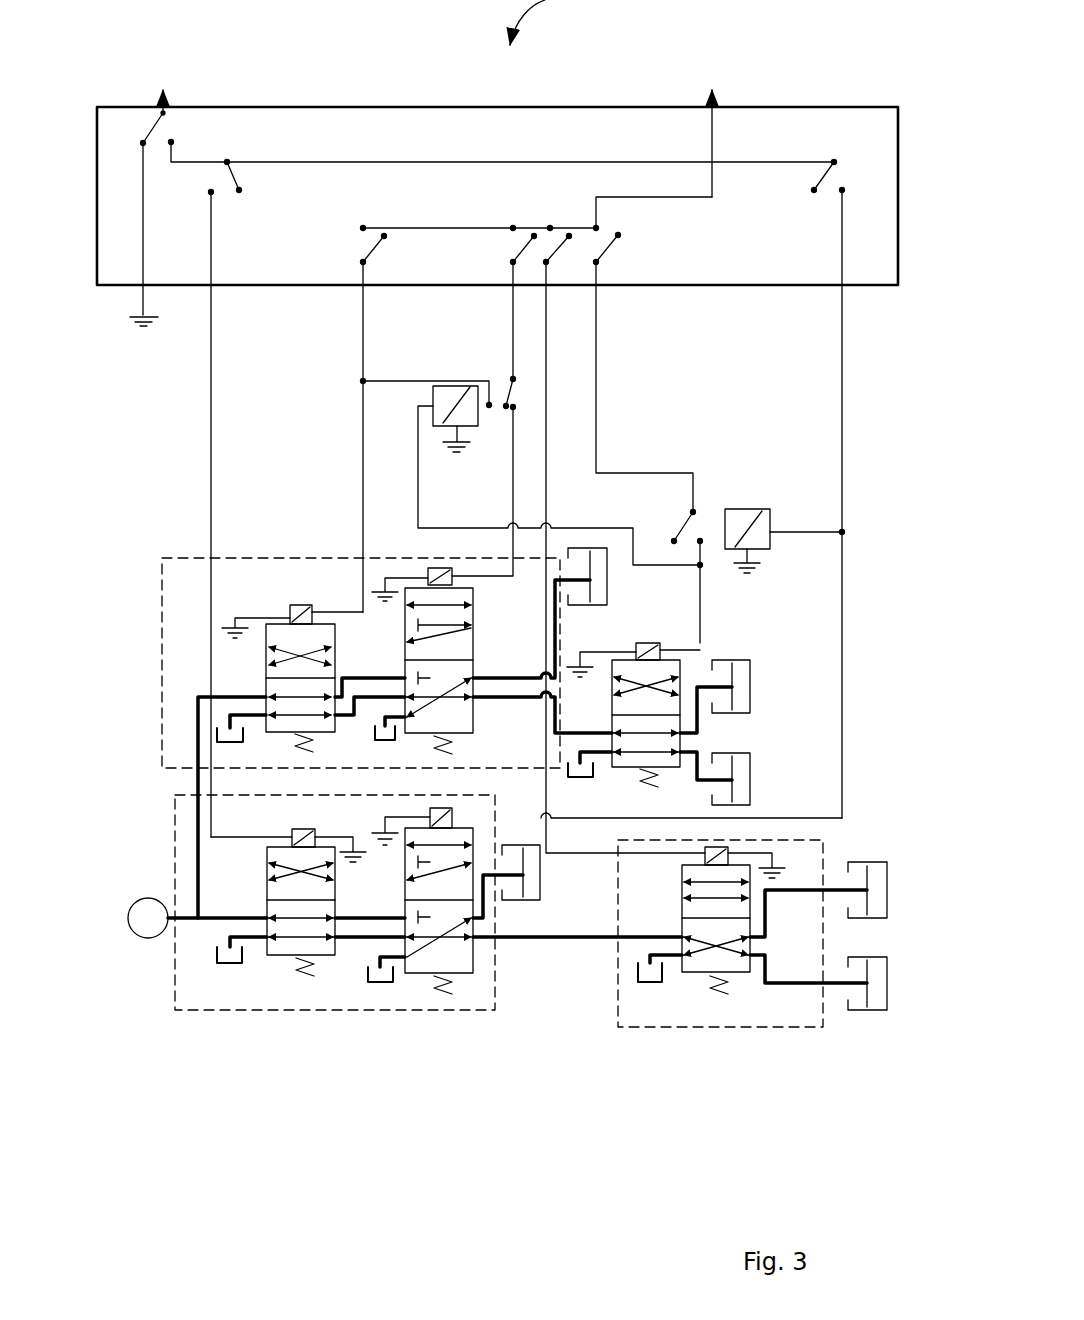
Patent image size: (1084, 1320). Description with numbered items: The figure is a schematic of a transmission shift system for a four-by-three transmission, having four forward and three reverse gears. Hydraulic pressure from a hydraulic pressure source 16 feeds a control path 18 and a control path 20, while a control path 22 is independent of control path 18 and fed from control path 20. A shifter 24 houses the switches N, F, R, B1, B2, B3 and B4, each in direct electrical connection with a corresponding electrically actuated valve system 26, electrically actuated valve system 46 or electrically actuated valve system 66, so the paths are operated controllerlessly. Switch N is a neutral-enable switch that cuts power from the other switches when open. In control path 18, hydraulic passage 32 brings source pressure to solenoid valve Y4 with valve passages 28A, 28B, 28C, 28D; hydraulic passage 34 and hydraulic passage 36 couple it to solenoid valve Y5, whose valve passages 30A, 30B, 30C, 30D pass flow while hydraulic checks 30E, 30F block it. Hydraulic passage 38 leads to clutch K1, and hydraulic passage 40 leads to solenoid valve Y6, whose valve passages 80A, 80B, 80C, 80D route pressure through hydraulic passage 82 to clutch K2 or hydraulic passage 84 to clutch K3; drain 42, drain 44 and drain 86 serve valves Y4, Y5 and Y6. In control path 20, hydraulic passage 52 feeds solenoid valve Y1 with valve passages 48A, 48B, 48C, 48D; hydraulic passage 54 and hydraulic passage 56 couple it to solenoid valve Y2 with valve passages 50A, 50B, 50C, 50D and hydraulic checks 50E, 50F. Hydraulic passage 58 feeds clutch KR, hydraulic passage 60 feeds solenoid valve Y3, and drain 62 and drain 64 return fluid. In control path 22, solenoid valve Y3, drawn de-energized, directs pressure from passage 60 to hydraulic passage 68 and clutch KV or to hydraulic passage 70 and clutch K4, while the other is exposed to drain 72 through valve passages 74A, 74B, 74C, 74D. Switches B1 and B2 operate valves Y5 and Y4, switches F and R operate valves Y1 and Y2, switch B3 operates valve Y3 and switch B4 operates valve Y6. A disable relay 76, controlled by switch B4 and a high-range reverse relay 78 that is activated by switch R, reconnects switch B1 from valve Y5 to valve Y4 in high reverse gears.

The hydraulic pressure source 16 is at (148, 918).
The control path 18 is at (162, 580).
The control path 20 is at (175, 822).
The control path 22 is at (823, 848).
The shifter 24 is at (813, 107).
The electrically actuated valve system 26 is at (137, 459).
The valve passage 28A is at (283, 642).
The valve passage 28B is at (318, 640).
The valve passage 28C is at (262, 678).
The valve passage 28D is at (283, 717).
The valve passage 30A is at (420, 590).
The valve passage 30B is at (457, 590).
The valve passage 30C is at (457, 698).
The valve passage 30D is at (423, 707).
The hydraulic check 30E is at (437, 587).
The hydraulic check 30F is at (407, 717).
The hydraulic passage 32 is at (207, 697).
The hydraulic passage 34 is at (345, 676).
The hydraulic passage 36 is at (363, 705).
The hydraulic passage 38 is at (487, 677).
The hydraulic passage 40 is at (678, 805).
The drain 42 is at (217, 733).
The drain 44 is at (387, 752).
The electrically actuated valve system 46 is at (372, 1092).
The valve passage 48A is at (280, 870).
The valve passage 48B is at (273, 878).
The valve passage 48C is at (267, 918).
The valve passage 48D is at (265, 922).
The valve passage 50A is at (462, 843).
The valve passage 50B is at (473, 873).
The valve passage 50C is at (470, 940).
The valve passage 50D is at (420, 947).
The hydraulic check 50E is at (415, 860).
The hydraulic check 50F is at (407, 913).
The hydraulic passage 52 is at (220, 917).
The hydraulic passage 54 is at (353, 923).
The hydraulic passage 56 is at (362, 940).
The hydraulic passage 58 is at (483, 905).
The hydraulic passage 60 is at (487, 938).
The drain 62 is at (227, 963).
The drain 64 is at (382, 983).
The electrically actuated valve system 66 is at (698, 1115).
The hydraulic passage 68 is at (808, 890).
The hydraulic passage 70 is at (813, 983).
The drain 72 is at (653, 980).
The valve passage 74A is at (697, 887).
The valve passage 74B is at (697, 907).
The valve passage 74C is at (735, 957).
The valve passage 74D is at (700, 957).
The disable relay 76 is at (433, 397).
The high-range reverse relay 78 is at (757, 488).
The valve passage 80A is at (635, 673).
The valve passage 80B is at (667, 677).
The valve passage 80C is at (622, 733).
The valve passage 80D is at (665, 755).
The hydraulic passage 82 is at (697, 717).
The hydraulic passage 84 is at (697, 753).
The drain 86 is at (583, 775).
The clutch K1 is at (607, 587).
The clutch K2 is at (750, 682).
The clutch K3 is at (750, 778).
The clutch K4 is at (887, 977).
The clutch KV is at (887, 883).
The clutch KR is at (540, 873).
The solenoid valve Y1 is at (263, 947).
The solenoid valve Y2 is at (412, 975).
The solenoid valve Y3 is at (717, 847).
The solenoid valve Y4 is at (266, 647).
The solenoid valve Y5 is at (400, 612).
The solenoid valve Y6 is at (612, 767).
The neutral-enable switch N is at (131, 123).
The forward switch F is at (246, 170).
The reverse switch R is at (857, 172).
The switch B1 is at (513, 218).
The switch B2 is at (330, 243).
The switch B3 is at (548, 218).
The switch B4 is at (628, 255).